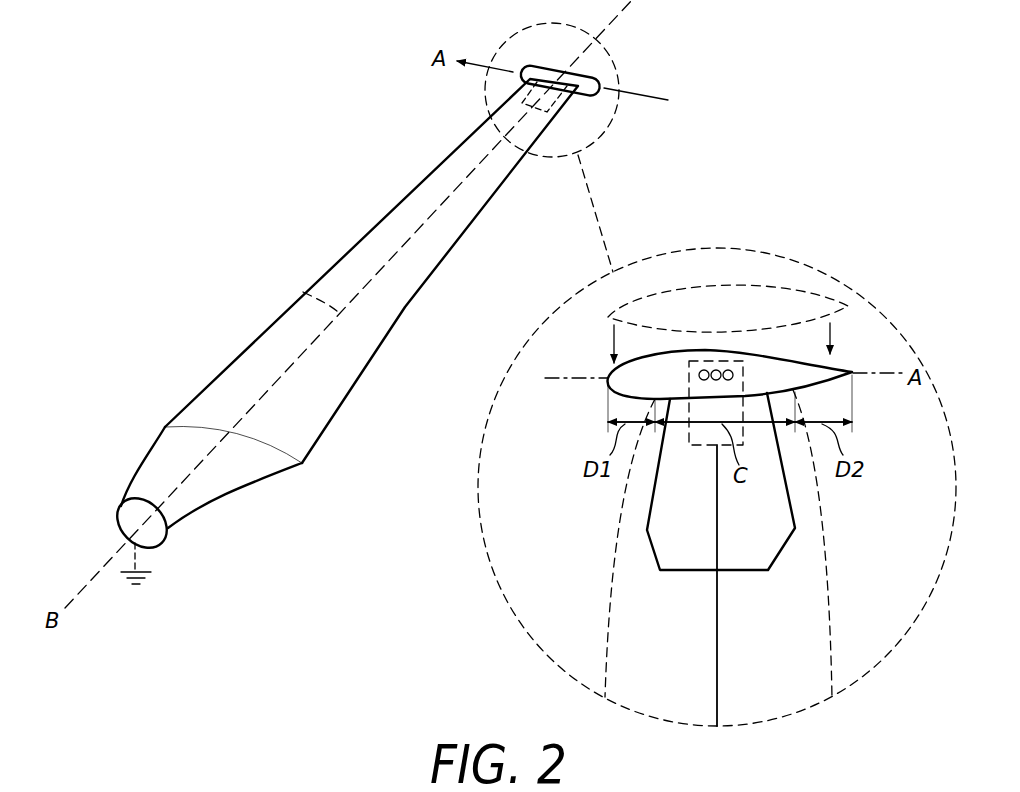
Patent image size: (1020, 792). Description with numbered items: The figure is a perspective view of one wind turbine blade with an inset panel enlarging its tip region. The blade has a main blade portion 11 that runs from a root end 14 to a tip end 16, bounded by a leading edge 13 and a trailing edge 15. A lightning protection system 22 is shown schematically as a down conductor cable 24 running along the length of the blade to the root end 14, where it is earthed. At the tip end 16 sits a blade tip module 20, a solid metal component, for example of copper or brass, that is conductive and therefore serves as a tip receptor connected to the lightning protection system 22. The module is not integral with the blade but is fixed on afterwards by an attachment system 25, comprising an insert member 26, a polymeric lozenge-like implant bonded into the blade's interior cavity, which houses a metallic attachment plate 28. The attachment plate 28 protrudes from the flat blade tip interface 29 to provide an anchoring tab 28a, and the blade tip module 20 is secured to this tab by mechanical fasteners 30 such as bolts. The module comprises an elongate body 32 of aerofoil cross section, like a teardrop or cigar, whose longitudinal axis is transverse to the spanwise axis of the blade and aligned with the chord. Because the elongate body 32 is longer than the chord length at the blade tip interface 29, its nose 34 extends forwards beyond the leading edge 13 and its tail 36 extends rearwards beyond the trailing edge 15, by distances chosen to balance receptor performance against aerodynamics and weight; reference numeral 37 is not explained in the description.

The main blade portion 11 is at (405, 307).
The leading edge 13 is at (608, 610).
The root end 14 is at (168, 532).
The trailing edge 15 is at (338, 405).
The tip end 16 is at (513, 89).
The blade tip module 20 is at (605, 362).
The lightning protection system 22 is at (238, 353).
The down conductor cable 24 is at (303, 292).
The attachment system 25 is at (508, 113).
The insert member 26 is at (760, 572).
The attachment plate 28 is at (691, 452).
The anchoring tab 28a is at (743, 361).
The blade tip interface 29 is at (758, 390).
The mechanical fasteners 30 is at (713, 359).
The elongate body 32 is at (655, 372).
The nose 34 is at (607, 382).
The tail 36 is at (851, 372).
The tip receptor cap 37 is at (583, 76).